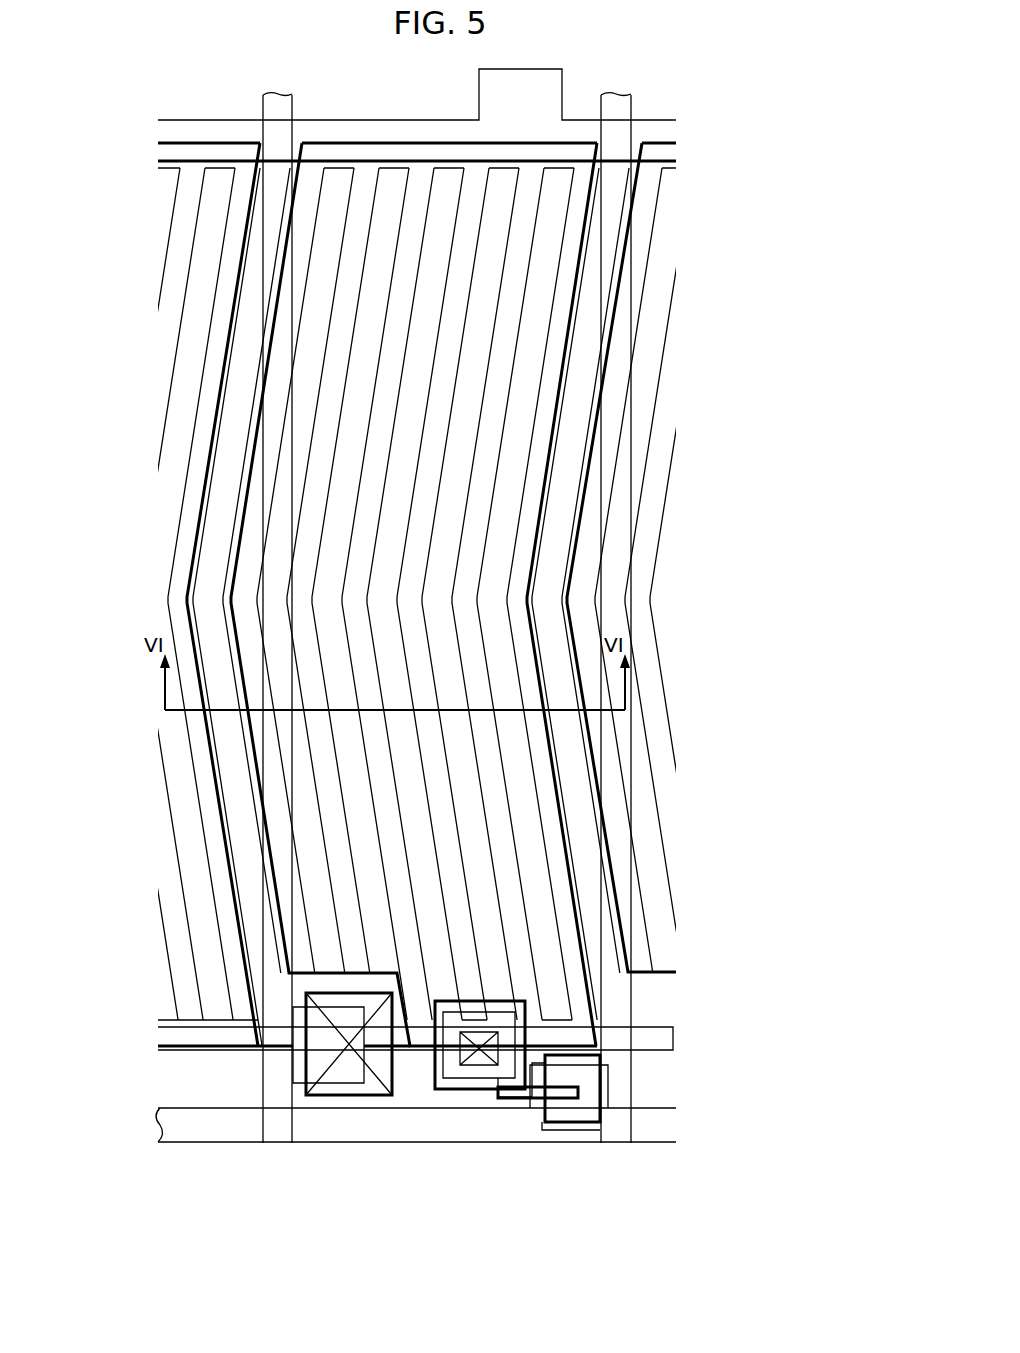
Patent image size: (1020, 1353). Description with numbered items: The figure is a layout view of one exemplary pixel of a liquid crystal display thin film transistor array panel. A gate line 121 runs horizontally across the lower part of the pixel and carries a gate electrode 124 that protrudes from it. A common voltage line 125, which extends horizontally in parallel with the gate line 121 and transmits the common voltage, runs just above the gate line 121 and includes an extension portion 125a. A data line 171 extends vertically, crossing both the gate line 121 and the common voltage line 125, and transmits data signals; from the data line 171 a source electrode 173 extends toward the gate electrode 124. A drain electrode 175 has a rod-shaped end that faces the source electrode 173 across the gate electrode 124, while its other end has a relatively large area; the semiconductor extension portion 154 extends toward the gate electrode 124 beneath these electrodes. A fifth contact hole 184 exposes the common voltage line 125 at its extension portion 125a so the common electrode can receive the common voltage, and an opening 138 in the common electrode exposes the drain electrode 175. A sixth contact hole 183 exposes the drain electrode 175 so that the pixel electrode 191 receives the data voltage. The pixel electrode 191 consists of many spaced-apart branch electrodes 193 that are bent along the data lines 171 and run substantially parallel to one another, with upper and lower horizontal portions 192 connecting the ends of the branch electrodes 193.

The gate line 121 is at (186, 1110).
The gate electrode 124 is at (615, 1100).
The common voltage line 125 is at (650, 1030).
The extension portion 125a is at (333, 1086).
The opening 138 is at (455, 1092).
The extension portion 154 is at (547, 1113).
The data line 171 is at (600, 125).
The source electrode 173 is at (582, 1124).
The drain electrode 175 is at (563, 1099).
The sixth contact hole 183 is at (483, 1066).
The fifth contact hole 184 is at (382, 1098).
The pixel electrode 191 is at (738, 448).
The horizontal portion 192 is at (372, 140).
The branch electrode 193 is at (530, 272).